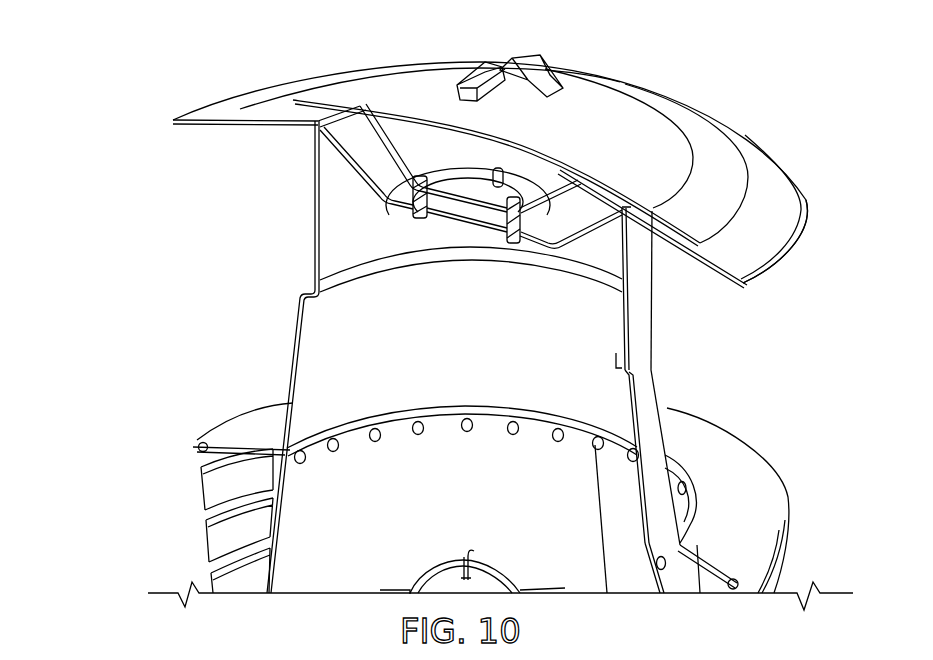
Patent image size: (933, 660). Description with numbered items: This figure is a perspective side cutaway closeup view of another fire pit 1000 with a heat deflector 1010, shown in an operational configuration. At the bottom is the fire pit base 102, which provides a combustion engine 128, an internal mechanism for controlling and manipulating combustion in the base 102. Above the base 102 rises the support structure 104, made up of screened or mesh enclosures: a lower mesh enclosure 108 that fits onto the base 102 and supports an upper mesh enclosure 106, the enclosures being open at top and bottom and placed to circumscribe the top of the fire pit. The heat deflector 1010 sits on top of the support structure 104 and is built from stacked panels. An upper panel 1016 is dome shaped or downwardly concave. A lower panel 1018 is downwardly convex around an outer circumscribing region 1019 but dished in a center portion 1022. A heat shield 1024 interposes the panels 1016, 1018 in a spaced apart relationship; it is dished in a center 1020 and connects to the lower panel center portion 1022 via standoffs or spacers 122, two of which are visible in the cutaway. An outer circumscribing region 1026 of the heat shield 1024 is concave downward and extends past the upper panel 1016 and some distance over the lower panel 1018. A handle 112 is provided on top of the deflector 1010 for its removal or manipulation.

The fire pit 1000 is at (124, 201).
The heat deflector 1010 is at (662, 82).
The upper panel 1016 is at (580, 97).
The heat shield 1024 is at (708, 147).
The outer circumscribing region 1026 is at (745, 153).
The outer circumscribing region 1019 is at (806, 192).
The lower panel 1018 is at (788, 234).
The handle 112 is at (507, 62).
The center 1020 is at (403, 143).
The center portion 1022 is at (605, 227).
The standoffs or spacers 122 is at (447, 212).
The support structure 104 is at (290, 355).
The upper mesh enclosure 106 is at (654, 277).
The lower mesh enclosure 108 is at (663, 381).
The combustion engine 128 is at (406, 527).
The fire pit base 102 is at (788, 572).